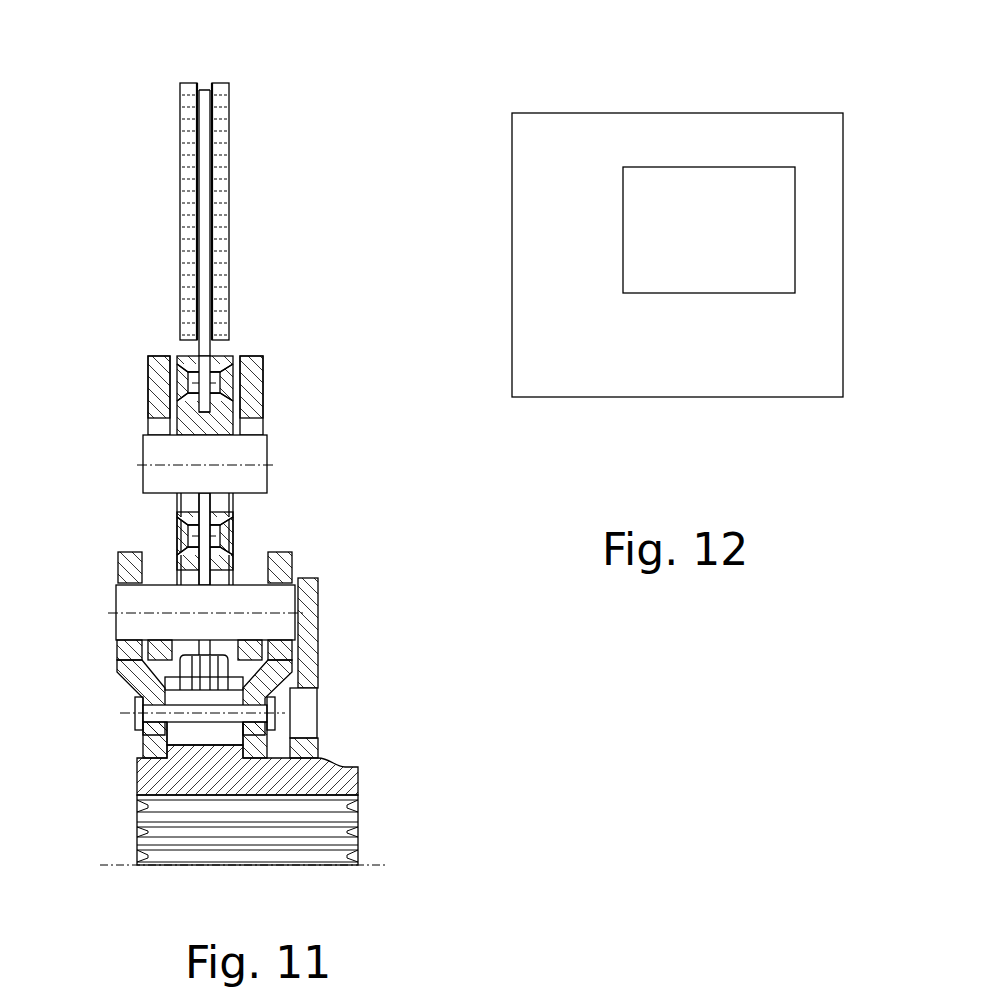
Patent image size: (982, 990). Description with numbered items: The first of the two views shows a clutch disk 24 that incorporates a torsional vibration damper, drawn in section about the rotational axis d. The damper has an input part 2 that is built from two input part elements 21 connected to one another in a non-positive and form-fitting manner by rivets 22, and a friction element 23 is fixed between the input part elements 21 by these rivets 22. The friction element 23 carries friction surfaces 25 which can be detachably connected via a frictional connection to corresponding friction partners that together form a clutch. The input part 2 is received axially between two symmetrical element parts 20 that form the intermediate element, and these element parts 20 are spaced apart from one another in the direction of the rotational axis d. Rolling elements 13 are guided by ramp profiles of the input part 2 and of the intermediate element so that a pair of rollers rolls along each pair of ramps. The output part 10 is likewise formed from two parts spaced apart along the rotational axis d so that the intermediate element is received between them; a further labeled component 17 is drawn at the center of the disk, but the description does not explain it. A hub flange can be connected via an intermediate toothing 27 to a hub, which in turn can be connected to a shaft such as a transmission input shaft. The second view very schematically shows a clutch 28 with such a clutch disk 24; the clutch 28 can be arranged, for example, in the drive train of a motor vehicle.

In FIG. 11, the input part 2 is at (268, 554).
In FIG. 11, the output part 10 is at (135, 672).
In FIG. 11, the rolling elements 13 is at (258, 449).
In FIG. 11, the shaft 17 is at (118, 598).
In FIG. 11, the element parts 20 is at (254, 392).
In FIG. 11, the input part elements 21 is at (184, 360).
In FIG. 11, the rivets 22 is at (181, 393).
In FIG. 11, the friction element 23 is at (206, 346).
In FIG. 11, the clutch disk 24 is at (203, 219).
In FIG. 12, the clutch disk 24 is at (683, 168).
In FIG. 11, the friction surfaces 25 is at (188, 112).
In FIG. 11, the intermediate toothing 27 is at (352, 774).
In FIG. 12, the clutch 28 is at (656, 397).
In FIG. 11, the rotational axis d is at (367, 868).